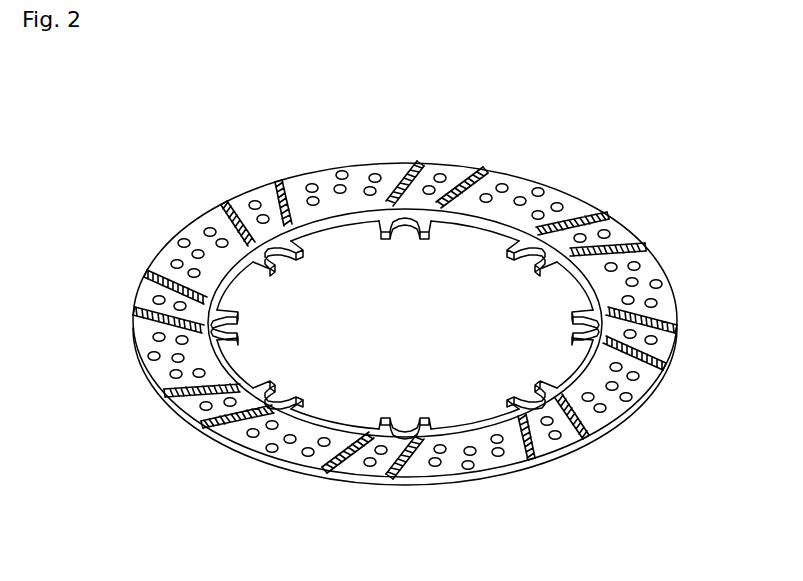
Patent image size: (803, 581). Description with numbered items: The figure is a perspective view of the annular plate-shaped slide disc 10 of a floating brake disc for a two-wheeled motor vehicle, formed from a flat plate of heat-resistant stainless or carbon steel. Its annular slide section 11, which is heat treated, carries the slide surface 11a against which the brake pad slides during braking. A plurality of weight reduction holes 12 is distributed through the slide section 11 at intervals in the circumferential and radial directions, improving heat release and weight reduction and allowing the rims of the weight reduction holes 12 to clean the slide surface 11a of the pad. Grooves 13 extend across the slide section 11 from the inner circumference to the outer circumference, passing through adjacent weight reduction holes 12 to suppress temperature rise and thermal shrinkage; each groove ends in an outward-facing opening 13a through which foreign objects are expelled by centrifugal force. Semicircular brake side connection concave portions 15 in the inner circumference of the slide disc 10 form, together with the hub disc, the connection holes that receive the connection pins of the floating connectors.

The slide disc 10 is at (611, 188).
The slide section 11 is at (527, 188).
The slide surface 11a is at (303, 186).
The weight reduction holes 12 is at (252, 204).
The grooves 13 is at (460, 186).
The openings 13a is at (666, 367).
The brake side connection concave portions 15 is at (241, 332).